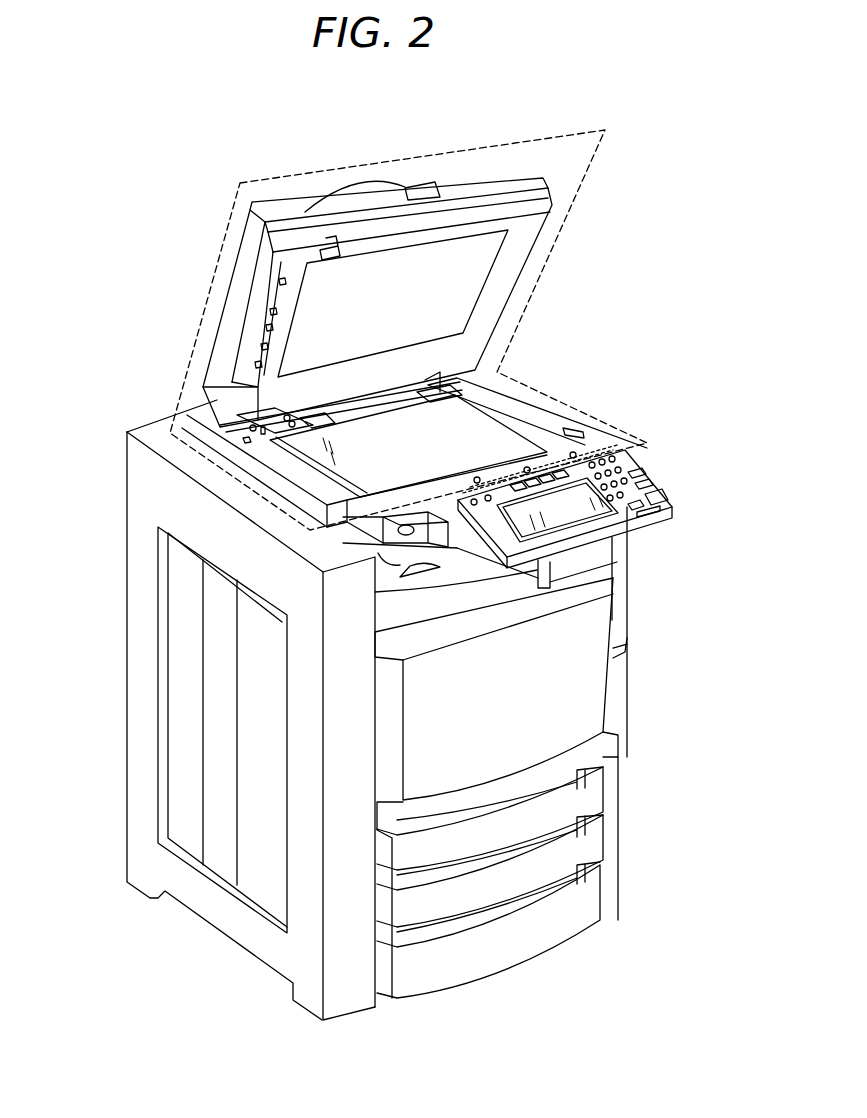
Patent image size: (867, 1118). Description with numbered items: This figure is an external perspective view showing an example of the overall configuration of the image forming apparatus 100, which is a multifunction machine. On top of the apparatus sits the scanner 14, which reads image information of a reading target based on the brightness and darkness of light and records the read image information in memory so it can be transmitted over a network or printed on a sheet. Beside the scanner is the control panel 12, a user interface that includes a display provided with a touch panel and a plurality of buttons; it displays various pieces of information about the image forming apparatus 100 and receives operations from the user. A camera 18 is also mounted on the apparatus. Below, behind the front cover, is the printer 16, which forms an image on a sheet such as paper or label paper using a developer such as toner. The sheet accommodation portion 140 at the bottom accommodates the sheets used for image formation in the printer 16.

The image forming apparatus 100 is at (218, 139).
The scanner 14 is at (513, 138).
The control panel 12 is at (567, 507).
The camera 18 is at (387, 532).
The printer 16 is at (577, 706).
The sheet accommodation portion 140 is at (610, 758).